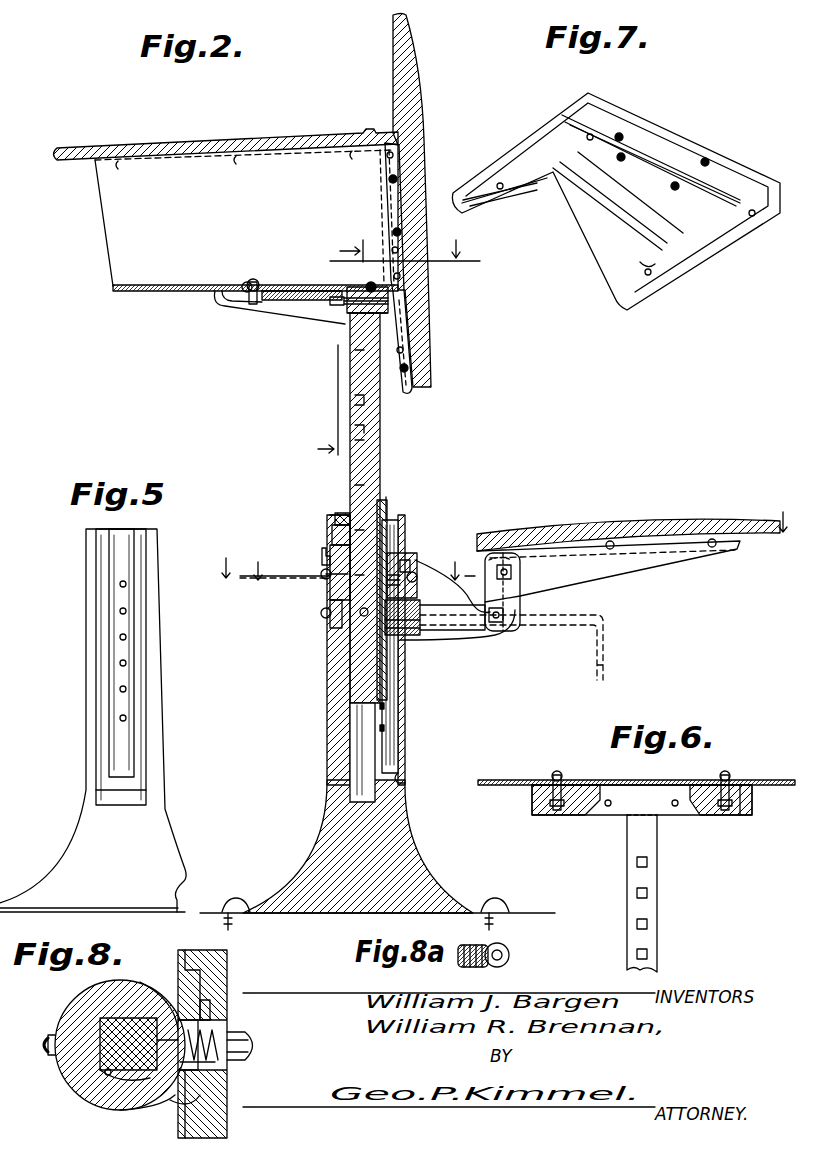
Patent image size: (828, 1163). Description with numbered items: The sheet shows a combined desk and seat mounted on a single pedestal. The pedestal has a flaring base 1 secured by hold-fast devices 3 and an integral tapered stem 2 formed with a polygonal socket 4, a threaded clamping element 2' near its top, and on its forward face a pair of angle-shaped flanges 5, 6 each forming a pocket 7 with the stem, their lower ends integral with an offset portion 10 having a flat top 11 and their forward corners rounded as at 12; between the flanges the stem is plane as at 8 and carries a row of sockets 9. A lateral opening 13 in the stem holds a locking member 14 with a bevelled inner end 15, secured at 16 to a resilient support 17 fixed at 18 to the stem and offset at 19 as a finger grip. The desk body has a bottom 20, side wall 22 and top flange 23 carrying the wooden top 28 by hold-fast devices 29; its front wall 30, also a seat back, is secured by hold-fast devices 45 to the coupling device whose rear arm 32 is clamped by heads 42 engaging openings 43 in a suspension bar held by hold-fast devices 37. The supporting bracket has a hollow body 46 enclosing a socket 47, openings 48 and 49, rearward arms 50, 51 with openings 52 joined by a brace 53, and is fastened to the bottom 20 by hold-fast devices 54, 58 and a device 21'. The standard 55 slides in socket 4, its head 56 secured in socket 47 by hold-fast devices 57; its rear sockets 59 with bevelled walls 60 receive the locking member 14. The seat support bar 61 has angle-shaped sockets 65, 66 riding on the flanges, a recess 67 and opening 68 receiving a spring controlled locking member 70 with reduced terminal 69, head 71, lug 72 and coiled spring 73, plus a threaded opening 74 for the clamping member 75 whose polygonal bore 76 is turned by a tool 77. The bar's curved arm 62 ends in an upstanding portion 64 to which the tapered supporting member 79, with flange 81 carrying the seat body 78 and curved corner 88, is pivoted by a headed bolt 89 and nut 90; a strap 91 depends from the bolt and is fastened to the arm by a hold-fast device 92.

In FIG. 2, the base 1 is at (444, 891).
In FIG. 5, the base 1 is at (64, 872).
In FIG. 2, the stem 2 is at (352, 650).
In FIG. 5, the stem 2 is at (93, 720).
In FIG. 8, the stem 2 is at (116, 1045).
In FIG. 2, the threaded clamping element 2' is at (336, 506).
In FIG. 2, the hold-fast devices 3 is at (498, 902).
In FIG. 2, the polygonal-shaped socket 4 is at (358, 784).
In FIG. 8, the polygonal-shaped socket 4 is at (100, 1072).
In FIG. 8, the angle-shaped flange 5 is at (195, 960).
In FIG. 2, the angle-shaped flange 6 is at (343, 352).
In FIG. 8, the angle-shaped flange 6 is at (185, 1105).
In FIG. 8, the pocket 7 is at (172, 1000).
In FIG. 2, the plane face 8 is at (360, 539).
In FIG. 5, the plane face 8 is at (126, 750).
In FIG. 8, the plane face 8 is at (150, 990).
In FIG. 2, the sockets 9 is at (386, 712).
In FIG. 5, the sockets 9 is at (126, 637).
In FIG. 2, the offset portion 10 is at (412, 793).
In FIG. 2, the flat top 11 is at (406, 760).
In FIG. 8, the rounded corner 12 is at (205, 995).
In FIG. 2, the laterally disposed opening 13 is at (338, 516).
In FIG. 2, the locking member 14 is at (338, 534).
In FIG. 2, the bevelled inner end 15 is at (332, 598).
In FIG. 2, the securing point 16 is at (324, 572).
In FIG. 2, the resilient support 17 is at (330, 618).
In FIG. 8, the resilient support 17 is at (52, 1035).
In FIG. 2, the securing point 18 is at (322, 618).
In FIG. 8, the securing point 18 is at (46, 1045).
In FIG. 2, the offset finger hold 19 is at (323, 550).
In FIG. 2, the desk bottom 20 is at (130, 291).
In FIG. 6, the desk bottom 20 is at (497, 786).
In FIG. 2, the hold-fast device 21' is at (230, 277).
In FIG. 2, the side wall 22 is at (110, 208).
In FIG. 2, the flange 23 is at (205, 158).
In FIG. 2, the top 28 is at (226, 145).
In FIG. 2, the hold-fast devices 29 is at (120, 164).
In FIG. 2, the front wall 30 is at (420, 108).
In FIG. 2, the rear arm 32 is at (383, 215).
In FIG. 2, the hold-fast devices 37 is at (387, 157).
In FIG. 2, the enlarged head 42 is at (399, 250).
In FIG. 2, the openings 43 is at (405, 390).
In FIG. 2, the hold-fast devices 45 is at (390, 181).
In FIG. 2, the hollow rectangular body portion 46 is at (350, 315).
In FIG. 7, the hollow rectangular body portion 46 is at (742, 168).
In FIG. 6, the hollow rectangular body portion 46 is at (755, 806).
In FIG. 2, the rectangular socket 47 is at (350, 335).
In FIG. 7, the rectangular socket 47 is at (630, 140).
In FIG. 6, the rectangular socket 47 is at (748, 780).
In FIG. 7, the openings 48 is at (592, 140).
In FIG. 7, the openings 49 is at (705, 158).
In FIG. 7, the angle-shaped arm 50 is at (642, 262).
In FIG. 2, the angle-shaped arm 51 is at (218, 298).
In FIG. 7, the angle-shaped arm 51 is at (484, 198).
In FIG. 2, the opening 52 is at (240, 302).
In FIG. 7, the opening 52 is at (510, 192).
In FIG. 2, the brace member 53 is at (285, 300).
In FIG. 7, the brace member 53 is at (596, 205).
In FIG. 2, the hold-fast devices 54 is at (255, 282).
In FIG. 2, the vertically adjustable standard 55 is at (350, 382).
In FIG. 6, the vertically adjustable standard 55 is at (650, 838).
In FIG. 8, the vertically adjustable standard 55 is at (112, 1018).
In FIG. 6, the head 56 is at (628, 805).
In FIG. 2, the hold-fast devices 57 is at (330, 301).
In FIG. 6, the hold-fast devices 57 is at (610, 800).
In FIG. 2, the hold-fast devices 58 is at (371, 283).
In FIG. 6, the hold-fast devices 58 is at (558, 772).
In FIG. 2, the sockets 59 is at (350, 402).
In FIG. 6, the sockets 59 is at (647, 893).
In FIG. 2, the bevelled lower wall 60 is at (350, 425).
In FIG. 2, the rectangular bar 61 is at (385, 530).
In FIG. 8, the rectangular bar 61 is at (228, 1095).
In FIG. 2, the curved forwardly extending arm 62 is at (462, 604).
In FIG. 2, the upstanding portion 64 is at (516, 562).
In FIG. 2, the angle-shaped socket 65 is at (392, 700).
In FIG. 8, the angle-shaped socket 65 is at (210, 1005).
In FIG. 8, the angle-shaped socket 66 is at (228, 1110).
In FIG. 2, the recess 67 is at (406, 556).
In FIG. 8, the recess 67 is at (115, 1110).
In FIG. 8, the opening 68 is at (218, 1030).
In FIG. 2, the reduced rear terminal portion 69 is at (367, 616).
In FIG. 8, the reduced rear terminal portion 69 is at (105, 1073).
In FIG. 2, the spring controlled locking member 70 is at (402, 572).
In FIG. 8, the spring controlled locking member 70 is at (220, 1048).
In FIG. 2, the head 71 is at (416, 574).
In FIG. 8, the head 71 is at (258, 1050).
In FIG. 8, the lug 72 is at (218, 1068).
In FIG. 2, the coiled spring 73 is at (410, 562).
In FIG. 8, the coiled spring 73 is at (240, 1062).
In FIG. 2, the transversely extending opening 74 is at (405, 637).
In FIG. 2, the clamping member 75 is at (420, 630).
In FIG. 8A, the clamping member 75 is at (511, 955).
In FIG. 8A, the polygonal-shaped bore 76 is at (503, 962).
In FIG. 2, the tool 77 is at (545, 628).
In FIG. 2, the body portion 78 is at (686, 525).
In FIG. 2, the tapered supporting member 79 is at (648, 561).
In FIG. 2, the outwardly extending flange 81 is at (574, 552).
In FIG. 2, the curved lower rear corner 88 is at (480, 600).
In FIG. 2, the headed bolt 89 is at (512, 572).
In FIG. 2, the securing nut 90 is at (505, 565).
In FIG. 2, the strap 91 is at (505, 605).
In FIG. 2, the hold-fast device 92 is at (498, 638).